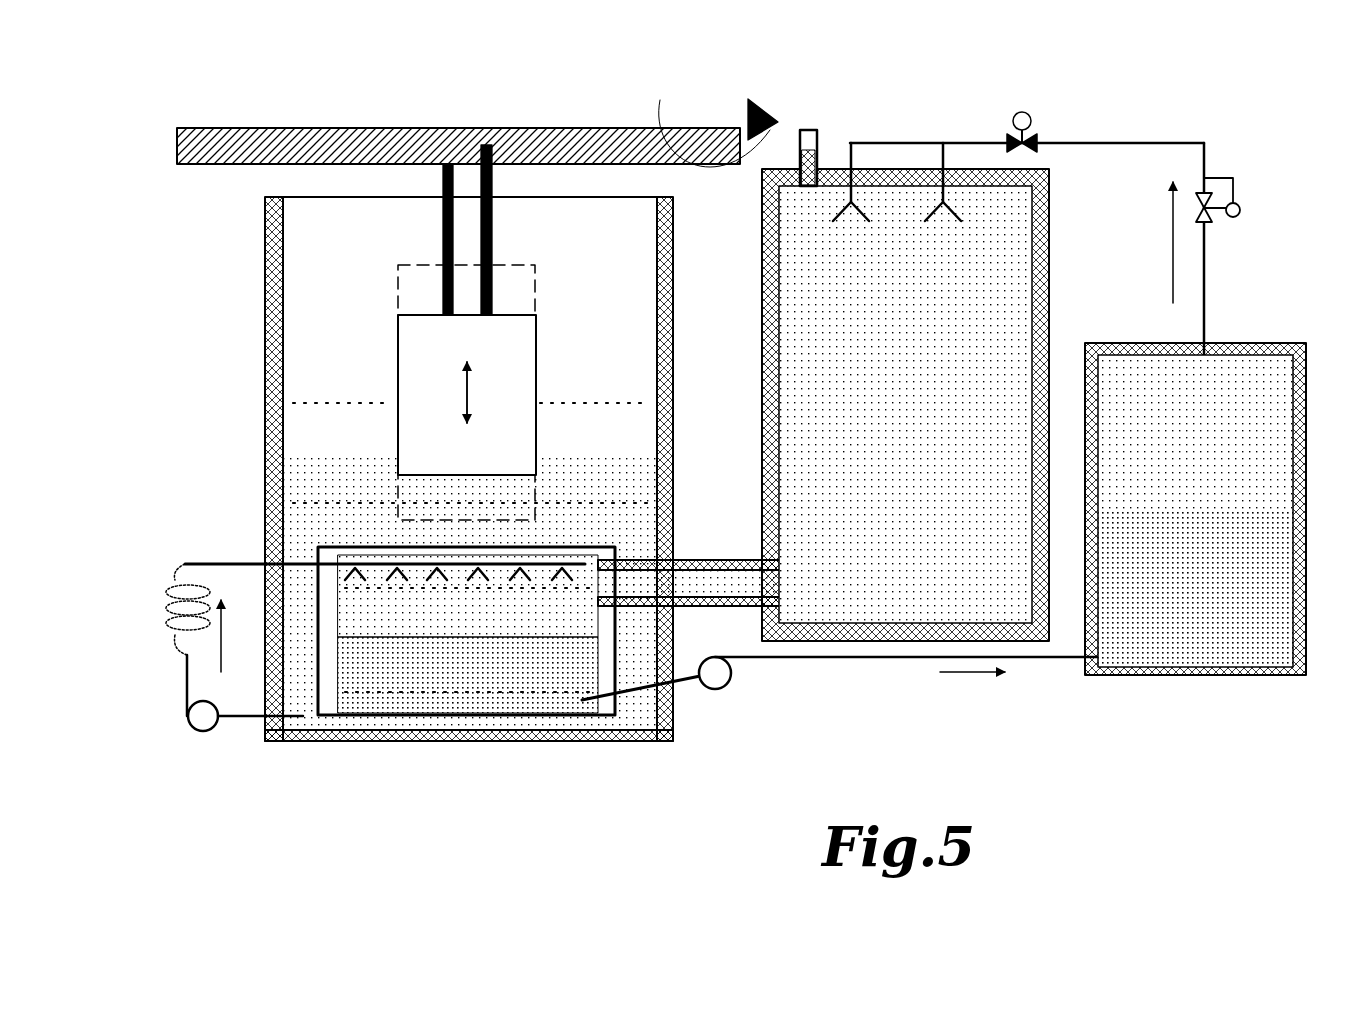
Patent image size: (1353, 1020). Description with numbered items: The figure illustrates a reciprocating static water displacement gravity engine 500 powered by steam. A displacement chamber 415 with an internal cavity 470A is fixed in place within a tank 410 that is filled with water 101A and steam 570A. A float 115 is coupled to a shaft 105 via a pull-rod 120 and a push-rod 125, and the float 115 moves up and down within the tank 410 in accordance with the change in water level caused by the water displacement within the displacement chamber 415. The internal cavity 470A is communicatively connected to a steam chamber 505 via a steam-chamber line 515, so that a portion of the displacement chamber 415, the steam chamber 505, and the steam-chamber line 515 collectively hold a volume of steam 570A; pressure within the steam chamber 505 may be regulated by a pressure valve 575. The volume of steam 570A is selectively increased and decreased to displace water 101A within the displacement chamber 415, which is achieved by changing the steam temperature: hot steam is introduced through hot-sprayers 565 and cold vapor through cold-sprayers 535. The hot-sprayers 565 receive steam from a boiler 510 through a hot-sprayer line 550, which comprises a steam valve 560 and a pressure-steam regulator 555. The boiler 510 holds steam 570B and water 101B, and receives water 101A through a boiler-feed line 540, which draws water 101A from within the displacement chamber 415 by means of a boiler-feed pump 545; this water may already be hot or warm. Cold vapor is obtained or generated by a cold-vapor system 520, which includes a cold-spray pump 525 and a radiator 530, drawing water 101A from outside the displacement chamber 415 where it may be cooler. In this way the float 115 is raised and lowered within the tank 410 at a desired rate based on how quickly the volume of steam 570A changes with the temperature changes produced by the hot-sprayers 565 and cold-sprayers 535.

The shaft 105 is at (245, 165).
The pull-rod 120 is at (441, 216).
The float 115 is at (398, 340).
The push-rod 125 is at (492, 215).
The tank 410 is at (265, 325).
The displacement chamber 415 is at (338, 741).
The cold-vapor system 520 is at (165, 552).
The water 101A is at (283, 520).
The cold-sprayers 535 is at (548, 556).
The steam-chamber line 515 is at (703, 560).
The steam 570A is at (355, 607).
The radiator 530 is at (185, 640).
The cold-spray pump 525 is at (188, 730).
The internal cavity 470A is at (565, 615).
The boiler-feed pump 545 is at (727, 690).
The boiler-feed line 540 is at (855, 680).
The pressure valve 575 is at (805, 130).
The hot-sprayers 565 is at (878, 143).
The reciprocating static water displacement gravity engine 500 is at (932, 122).
The steam valve 560 is at (1031, 118).
The hot-sprayer line 550 is at (1160, 128).
The pressure-steam regulator 555 is at (1240, 190).
The steam chamber 505 is at (1050, 285).
The steam 570B is at (1277, 378).
The water 101B is at (1135, 655).
The boiler 510 is at (1215, 675).